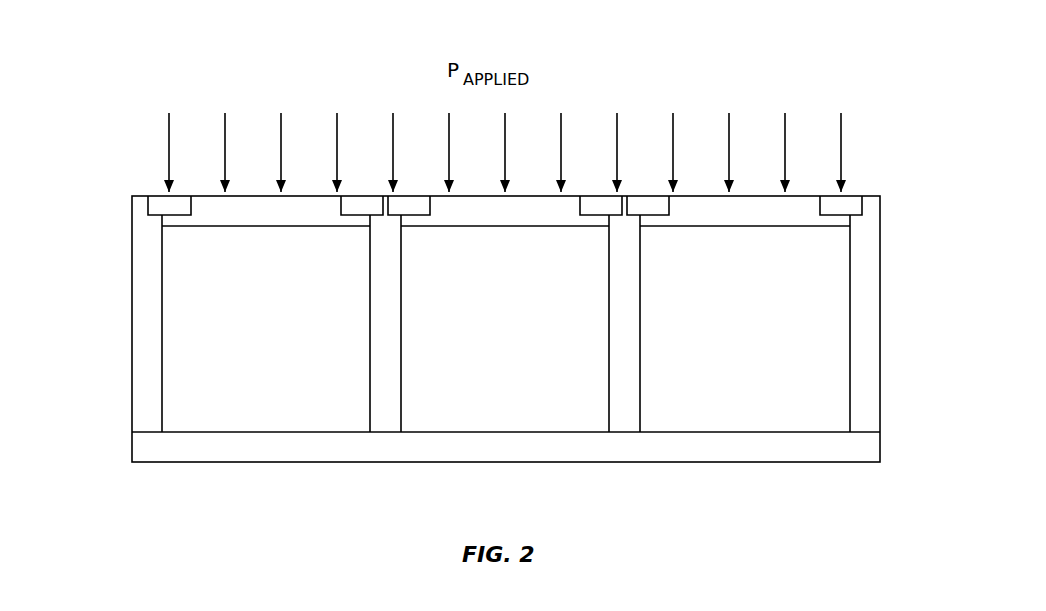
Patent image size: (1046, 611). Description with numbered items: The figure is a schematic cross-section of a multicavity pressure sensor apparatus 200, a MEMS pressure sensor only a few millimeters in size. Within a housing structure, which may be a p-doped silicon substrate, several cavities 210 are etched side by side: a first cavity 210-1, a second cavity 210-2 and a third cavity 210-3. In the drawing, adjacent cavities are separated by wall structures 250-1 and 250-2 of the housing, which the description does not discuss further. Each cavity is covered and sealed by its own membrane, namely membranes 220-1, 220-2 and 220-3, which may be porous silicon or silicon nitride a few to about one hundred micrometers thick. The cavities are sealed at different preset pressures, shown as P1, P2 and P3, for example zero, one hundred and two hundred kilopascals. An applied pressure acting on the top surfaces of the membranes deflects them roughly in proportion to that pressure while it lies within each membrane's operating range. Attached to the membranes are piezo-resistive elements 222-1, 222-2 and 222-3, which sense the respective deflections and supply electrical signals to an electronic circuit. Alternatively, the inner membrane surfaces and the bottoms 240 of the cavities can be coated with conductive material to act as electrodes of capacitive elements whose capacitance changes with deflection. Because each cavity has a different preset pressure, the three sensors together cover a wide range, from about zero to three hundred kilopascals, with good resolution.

The multicavity pressure sensor apparatus 200 is at (138, 126).
The cavities 210 is at (327, 375).
The first cavity 210-1 is at (222, 323).
The second cavity 210-2 is at (502, 347).
The third cavity 210-3 is at (789, 323).
The first membrane 220-1 is at (311, 228).
The second membrane 220-2 is at (562, 228).
The third membrane 220-3 is at (818, 228).
The first piezo-resistive element 222-1 is at (155, 200).
The second piezo-resistive element 222-2 is at (590, 207).
The third piezo-resistive element 222-3 is at (848, 207).
The bottoms of the cavities 240 is at (155, 445).
The first partition wall 250-1 is at (385, 288).
The second partition wall 250-2 is at (625, 288).